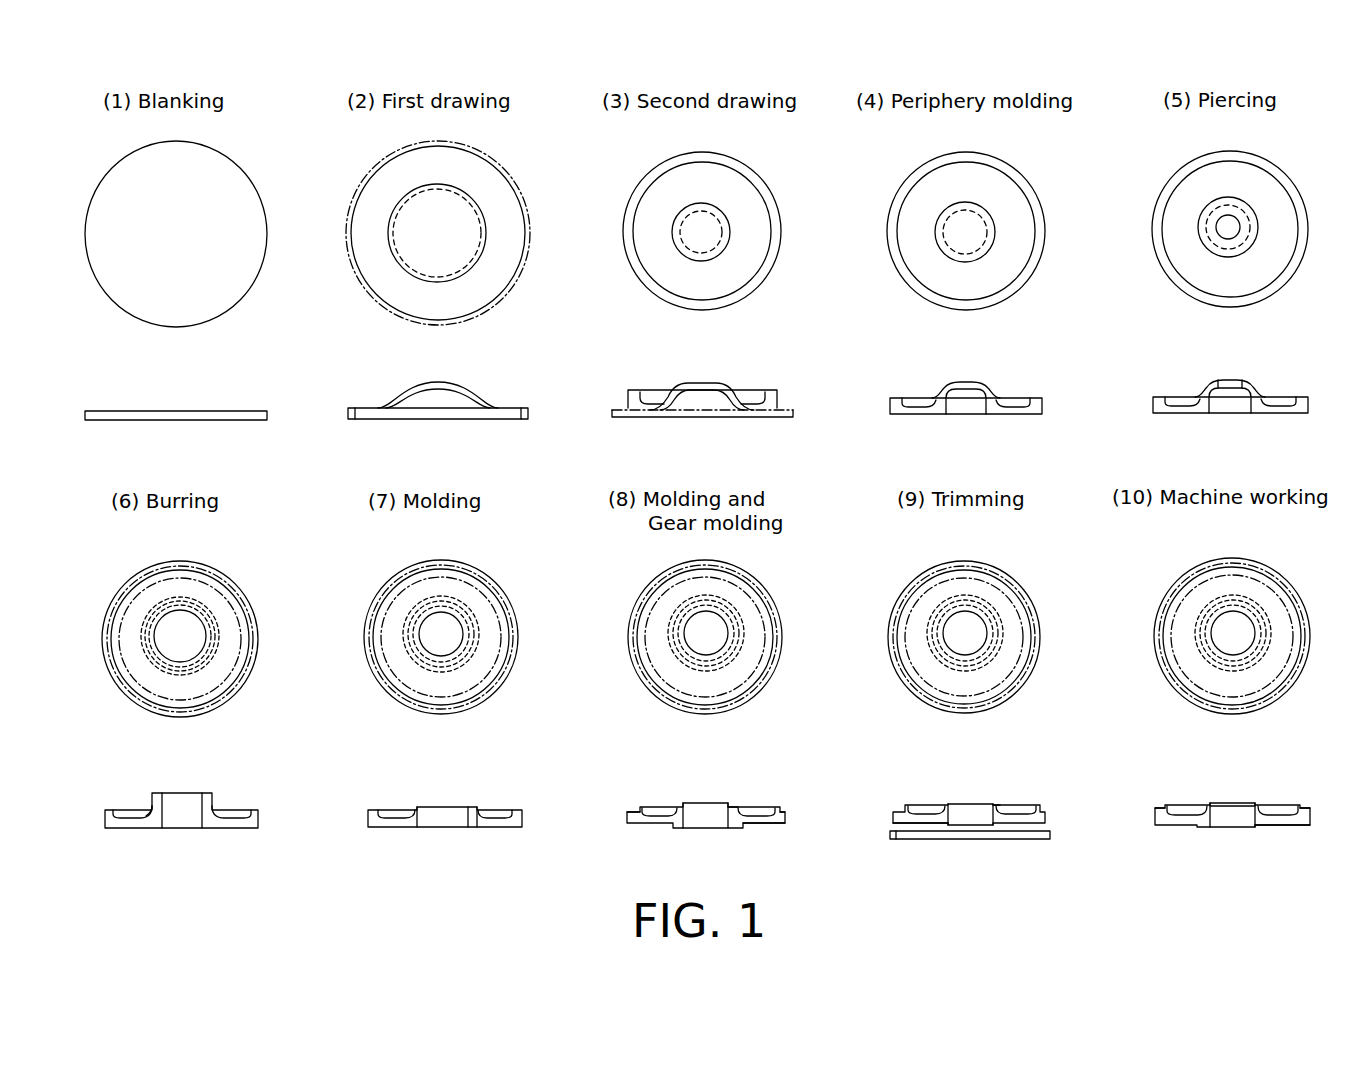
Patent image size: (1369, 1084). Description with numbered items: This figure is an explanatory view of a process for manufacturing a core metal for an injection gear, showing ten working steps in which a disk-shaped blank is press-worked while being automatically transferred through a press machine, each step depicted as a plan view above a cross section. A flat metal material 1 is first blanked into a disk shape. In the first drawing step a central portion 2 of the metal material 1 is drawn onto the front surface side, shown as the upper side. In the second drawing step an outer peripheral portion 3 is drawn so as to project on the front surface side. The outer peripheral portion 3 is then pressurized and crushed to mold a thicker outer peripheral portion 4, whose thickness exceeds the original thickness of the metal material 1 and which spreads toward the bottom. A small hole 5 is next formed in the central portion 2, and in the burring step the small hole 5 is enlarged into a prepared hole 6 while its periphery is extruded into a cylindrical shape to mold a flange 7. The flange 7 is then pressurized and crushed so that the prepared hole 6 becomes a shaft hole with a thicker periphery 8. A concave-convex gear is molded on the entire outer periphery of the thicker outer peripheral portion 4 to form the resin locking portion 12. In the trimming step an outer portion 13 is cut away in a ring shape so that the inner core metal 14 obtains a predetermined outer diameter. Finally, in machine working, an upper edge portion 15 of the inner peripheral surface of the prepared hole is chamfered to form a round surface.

The metal material 1 is at (228, 180).
The central portion 2 is at (472, 223).
The outer peripheral portion 3 is at (767, 263).
The thicker outer peripheral portion 4 is at (1031, 263).
The small hole 5 is at (1250, 217).
The prepared hole 6 is at (188, 633).
The flange 7 is at (152, 805).
The thicker periphery 8 is at (468, 807).
The resin locking portion 12 is at (630, 812).
The outer portion 13 is at (785, 820).
The inner core metal 14 is at (935, 818).
The upper edge portion 15 is at (1255, 803).